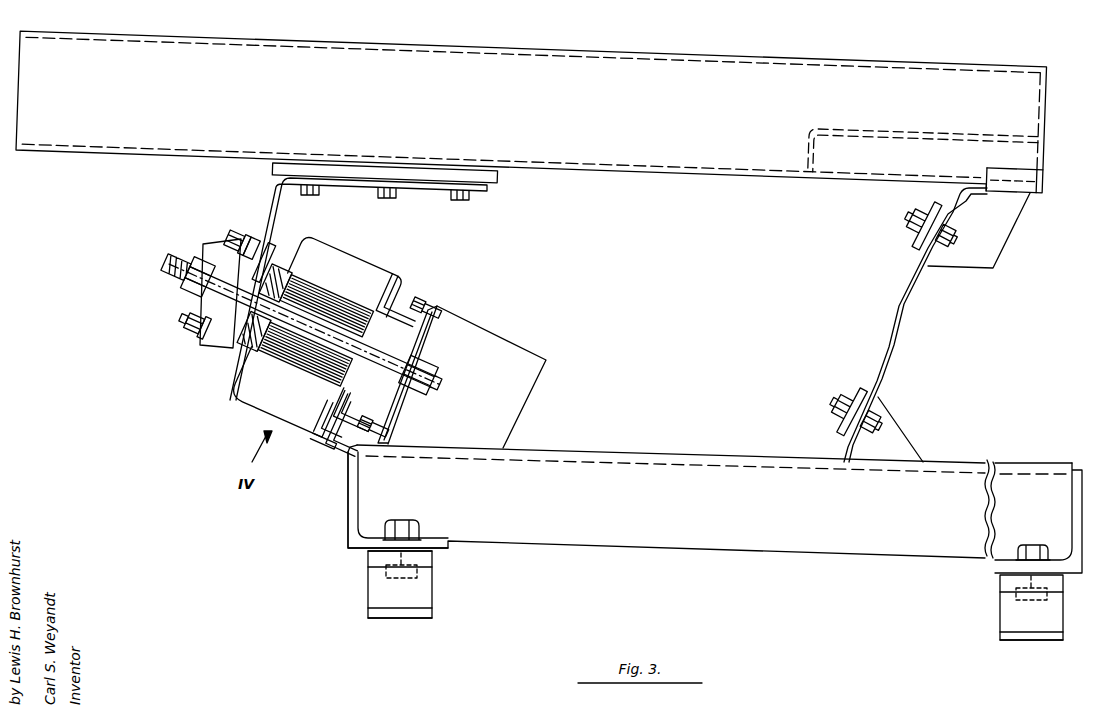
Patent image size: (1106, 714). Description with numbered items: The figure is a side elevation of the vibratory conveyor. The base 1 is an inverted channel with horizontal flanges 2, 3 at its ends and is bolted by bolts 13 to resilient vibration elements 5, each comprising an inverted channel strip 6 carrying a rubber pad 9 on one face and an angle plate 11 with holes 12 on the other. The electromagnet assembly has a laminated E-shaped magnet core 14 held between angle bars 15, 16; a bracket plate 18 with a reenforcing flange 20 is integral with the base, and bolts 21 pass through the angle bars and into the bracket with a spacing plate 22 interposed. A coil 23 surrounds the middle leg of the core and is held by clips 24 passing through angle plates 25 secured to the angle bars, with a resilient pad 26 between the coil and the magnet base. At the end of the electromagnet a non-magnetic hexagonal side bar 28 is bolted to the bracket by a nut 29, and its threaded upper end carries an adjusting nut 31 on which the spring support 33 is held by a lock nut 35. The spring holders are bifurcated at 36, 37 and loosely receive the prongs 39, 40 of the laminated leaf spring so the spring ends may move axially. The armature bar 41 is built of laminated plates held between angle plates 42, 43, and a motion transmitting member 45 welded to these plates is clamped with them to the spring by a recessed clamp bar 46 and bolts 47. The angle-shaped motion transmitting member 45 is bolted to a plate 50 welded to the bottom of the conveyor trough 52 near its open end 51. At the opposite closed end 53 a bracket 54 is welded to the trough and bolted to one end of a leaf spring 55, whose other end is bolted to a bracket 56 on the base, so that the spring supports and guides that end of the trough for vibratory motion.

The base 1 is at (660, 545).
The horizontal flange 2 is at (352, 552).
The horizontal flange 3 is at (997, 567).
The resilient vibration element 5 is at (432, 591).
The inverted channel strip 6 is at (432, 567).
The rubber pad 9 is at (368, 568).
The angle plate 11 is at (368, 608).
The hole 12 is at (421, 619).
The bolt 13 is at (424, 523).
The magnet core 14 is at (290, 350).
The angle bar 15 is at (368, 408).
The angle bar 16 is at (432, 306).
The bracket plate 18 is at (436, 338).
The reenforcing flange 20 is at (530, 384).
The bolt 21 is at (423, 300).
The spacing plate 22 is at (440, 334).
The coil 23 is at (348, 250).
The clip 24 is at (324, 434).
The angle plate 25 is at (408, 274).
The resilient pad 26 is at (328, 410).
The hexagonal side bar 28 is at (318, 366).
The nut 29 is at (437, 363).
The adjusting nut 31 is at (243, 322).
The spring support 33 is at (205, 286).
The lock nut 35 is at (202, 256).
The bifurcation 36 is at (249, 240).
The bifurcation 37 is at (198, 312).
The spring prong 39 is at (233, 238).
The spring prong 40 is at (194, 331).
The armature bar 41 is at (272, 270).
The angle plate 42 is at (214, 347).
The angle plate 43 is at (275, 252).
The motion transmitting member 45 is at (283, 210).
The clamp bar 46 is at (238, 232).
The bolt 47 is at (184, 323).
The plate 50 is at (438, 166).
The open end 51 is at (18, 89).
The conveyor trough 52 is at (354, 49).
The closed end 53 is at (1042, 112).
The bracket 54 is at (1010, 216).
The leaf spring 55 is at (904, 306).
The bracket 56 is at (900, 440).